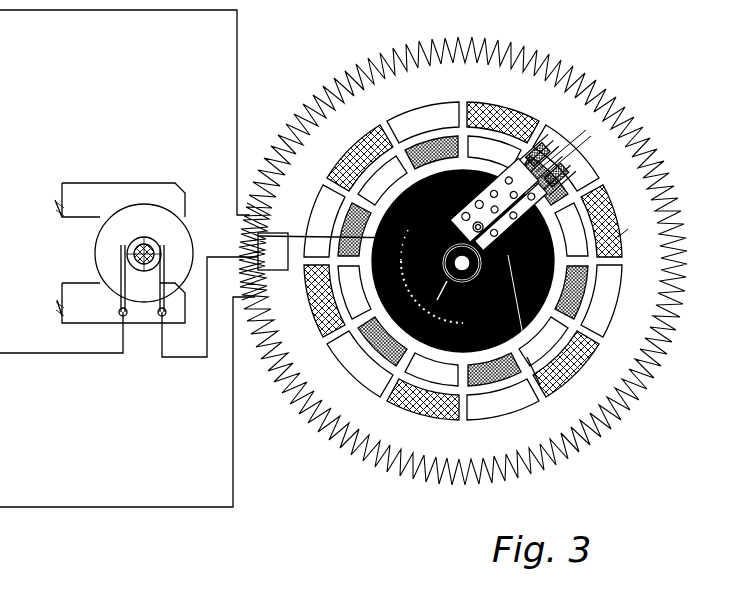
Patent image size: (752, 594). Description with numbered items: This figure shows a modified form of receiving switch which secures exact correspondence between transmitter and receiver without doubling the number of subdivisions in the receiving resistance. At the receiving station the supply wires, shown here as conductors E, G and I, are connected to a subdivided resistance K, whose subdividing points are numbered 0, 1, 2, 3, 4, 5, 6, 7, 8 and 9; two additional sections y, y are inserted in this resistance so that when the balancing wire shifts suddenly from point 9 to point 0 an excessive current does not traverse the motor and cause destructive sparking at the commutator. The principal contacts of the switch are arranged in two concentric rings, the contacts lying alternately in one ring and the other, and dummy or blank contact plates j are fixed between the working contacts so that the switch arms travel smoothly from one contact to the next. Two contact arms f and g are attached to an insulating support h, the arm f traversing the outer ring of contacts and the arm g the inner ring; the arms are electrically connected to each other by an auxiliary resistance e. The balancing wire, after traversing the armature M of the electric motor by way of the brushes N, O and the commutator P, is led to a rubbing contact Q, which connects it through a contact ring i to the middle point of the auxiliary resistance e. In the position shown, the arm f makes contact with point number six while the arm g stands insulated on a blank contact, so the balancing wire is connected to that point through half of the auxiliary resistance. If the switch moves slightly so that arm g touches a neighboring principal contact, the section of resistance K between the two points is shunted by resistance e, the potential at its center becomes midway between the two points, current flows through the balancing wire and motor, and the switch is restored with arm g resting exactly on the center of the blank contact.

The subdividing point 0 is at (357, 368).
The subdividing point 1 is at (420, 412).
The subdividing point 2 is at (497, 415).
The subdividing point 3 is at (573, 383).
The subdividing point 4 is at (613, 305).
The subdividing point 5 is at (613, 223).
The subdividing point 6 is at (570, 152).
The subdividing point 7 is at (495, 138).
The subdividing point 8 is at (425, 110).
The subdividing point 9 is at (378, 170).
The auxiliary resistance e is at (430, 382).
The contact arm f is at (548, 167).
The contact arm g is at (545, 190).
The insulating support h is at (540, 355).
The contact ring i is at (375, 292).
The dummy contact plate j is at (618, 237).
The subdivided resistance K is at (606, 282).
The additional resistance section y is at (463, 261).
The rubbing contact Q is at (372, 238).
The line conductor E is at (125, 112).
The line conductor G is at (137, 512).
The line conductor I is at (88, 352).
The armature M is at (118, 232).
The commutator P is at (147, 237).
The brush N is at (125, 293).
The brush O is at (164, 293).